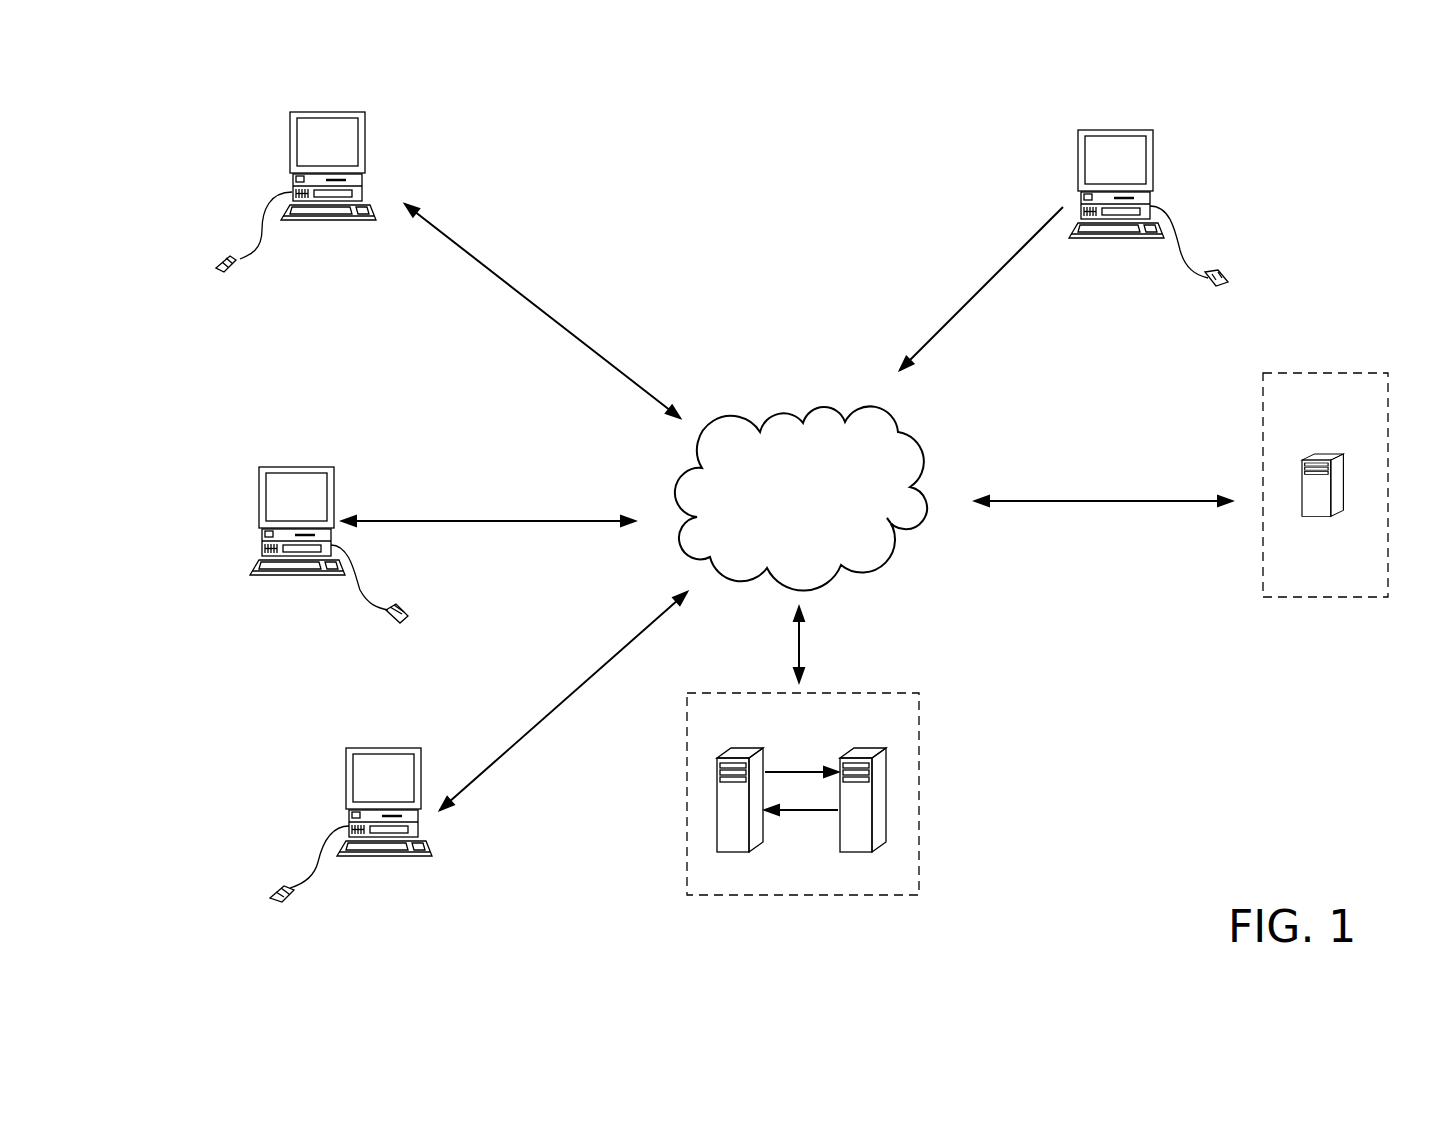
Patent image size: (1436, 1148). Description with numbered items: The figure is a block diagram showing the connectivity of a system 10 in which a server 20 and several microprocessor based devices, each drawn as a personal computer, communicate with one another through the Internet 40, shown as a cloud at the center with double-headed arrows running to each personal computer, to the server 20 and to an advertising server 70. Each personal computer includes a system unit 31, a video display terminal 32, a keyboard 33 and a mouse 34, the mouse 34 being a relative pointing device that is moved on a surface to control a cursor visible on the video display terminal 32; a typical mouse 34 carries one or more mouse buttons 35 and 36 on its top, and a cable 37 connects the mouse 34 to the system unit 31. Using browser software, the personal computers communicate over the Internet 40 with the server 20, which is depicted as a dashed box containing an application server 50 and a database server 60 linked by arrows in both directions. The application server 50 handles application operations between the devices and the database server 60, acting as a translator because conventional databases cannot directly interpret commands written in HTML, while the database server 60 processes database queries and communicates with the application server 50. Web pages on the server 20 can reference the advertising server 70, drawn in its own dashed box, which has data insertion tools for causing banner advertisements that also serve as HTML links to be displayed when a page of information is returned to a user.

The system 10 is at (665, 176).
The server 20 is at (837, 820).
The system unit 31 is at (420, 826).
The video display terminal 32 is at (421, 752).
The keyboard 33 is at (422, 858).
The mouse 34 is at (407, 615).
The mouse button 35 is at (386, 613).
The mouse button 36 is at (397, 607).
The cable 37 is at (262, 245).
The Internet 40 is at (858, 464).
The application server 50 is at (733, 845).
The database server 60 is at (858, 845).
The advertising server 70 is at (1262, 558).